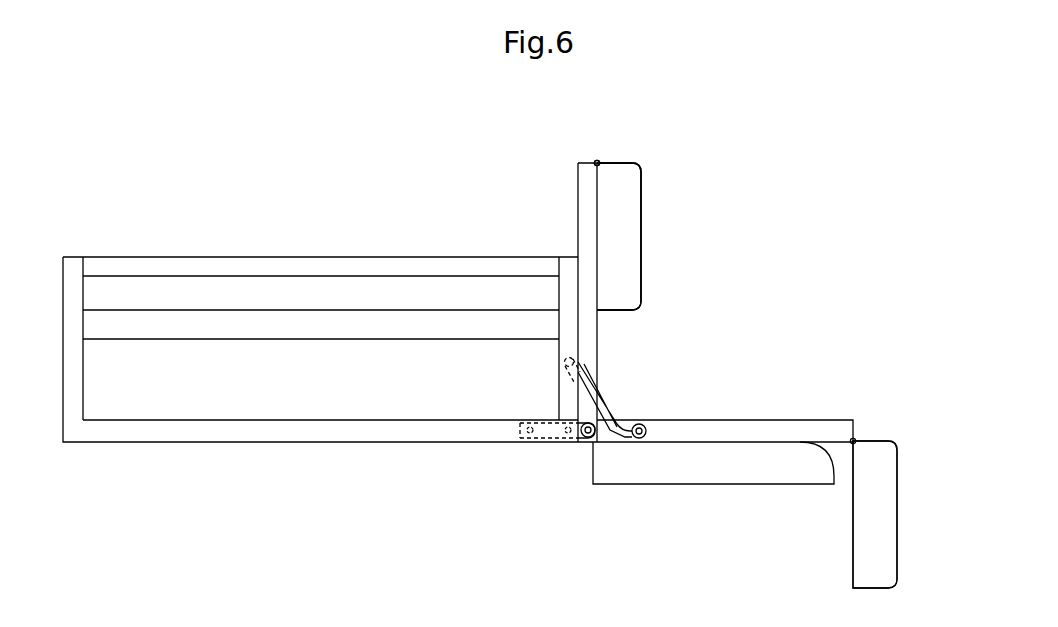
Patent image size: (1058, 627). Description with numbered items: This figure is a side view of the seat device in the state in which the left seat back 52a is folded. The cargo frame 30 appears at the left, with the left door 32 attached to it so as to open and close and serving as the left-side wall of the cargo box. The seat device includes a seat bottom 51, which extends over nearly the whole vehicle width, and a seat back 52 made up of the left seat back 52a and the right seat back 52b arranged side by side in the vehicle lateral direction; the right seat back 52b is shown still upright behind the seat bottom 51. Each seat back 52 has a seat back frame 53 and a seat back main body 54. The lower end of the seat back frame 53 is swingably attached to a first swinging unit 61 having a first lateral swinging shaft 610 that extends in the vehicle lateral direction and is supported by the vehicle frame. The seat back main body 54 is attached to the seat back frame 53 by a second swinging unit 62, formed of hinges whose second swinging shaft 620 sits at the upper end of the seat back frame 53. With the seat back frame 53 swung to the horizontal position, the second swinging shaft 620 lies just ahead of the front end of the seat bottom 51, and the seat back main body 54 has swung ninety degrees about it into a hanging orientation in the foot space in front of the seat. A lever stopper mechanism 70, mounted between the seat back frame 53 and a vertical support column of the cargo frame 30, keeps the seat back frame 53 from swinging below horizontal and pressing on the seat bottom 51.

The cargo frame 30 is at (72, 377).
The left door 32 is at (293, 267).
The seat bottom 51 is at (718, 472).
The seat back 52 is at (747, 375).
The left seat back 52a is at (652, 208).
The right seat back 52b is at (874, 430).
The seat back frame 53 is at (585, 205).
The seat back main body 54 is at (628, 233).
The first swinging unit 61 is at (587, 448).
The second swinging unit 62 is at (597, 160).
The second swinging shaft 620 is at (596, 162).
The lever stopper mechanism 70 is at (609, 405).
The first lateral swinging shaft 610 is at (585, 434).